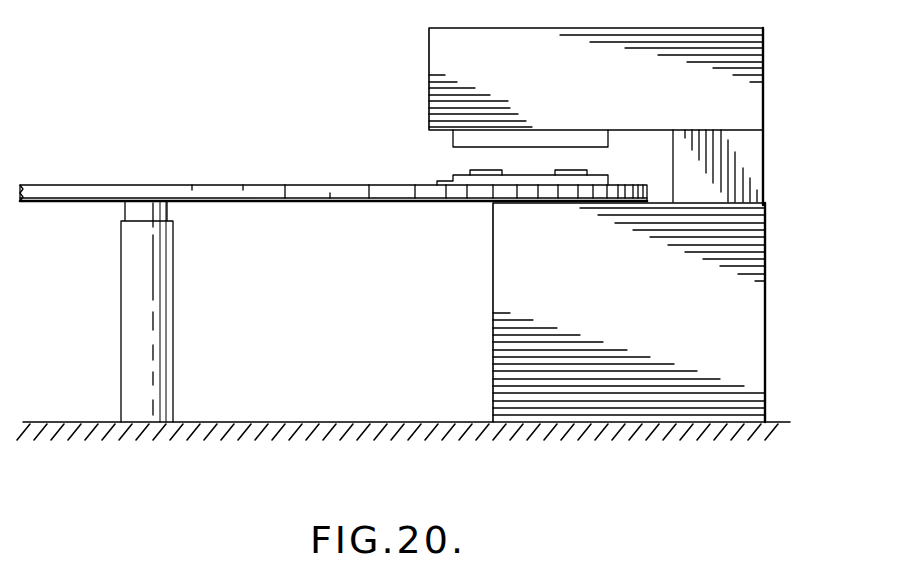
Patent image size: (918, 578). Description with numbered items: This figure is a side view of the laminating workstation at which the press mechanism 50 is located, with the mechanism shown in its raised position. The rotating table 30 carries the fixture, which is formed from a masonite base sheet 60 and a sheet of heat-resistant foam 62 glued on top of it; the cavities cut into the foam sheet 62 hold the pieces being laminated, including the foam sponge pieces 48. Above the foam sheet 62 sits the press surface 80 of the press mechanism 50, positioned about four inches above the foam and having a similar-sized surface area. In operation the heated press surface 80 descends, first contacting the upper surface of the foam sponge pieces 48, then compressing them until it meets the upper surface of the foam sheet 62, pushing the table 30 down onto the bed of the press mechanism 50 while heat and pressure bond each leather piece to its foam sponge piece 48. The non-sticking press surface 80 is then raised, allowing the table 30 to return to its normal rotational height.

The table 30 is at (270, 192).
The foam sponge piece 48 is at (565, 169).
The press mechanism 50 is at (748, 308).
The base sheet 60 is at (437, 181).
The heat-resistant foam sheet 62 is at (517, 177).
The press surface 80 is at (465, 148).